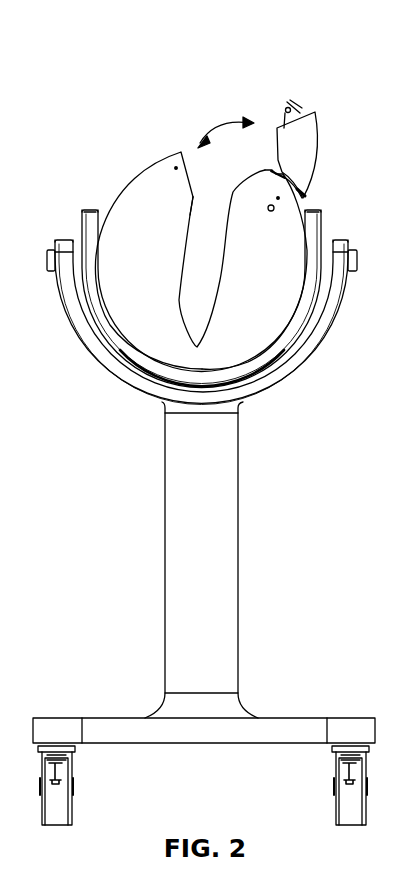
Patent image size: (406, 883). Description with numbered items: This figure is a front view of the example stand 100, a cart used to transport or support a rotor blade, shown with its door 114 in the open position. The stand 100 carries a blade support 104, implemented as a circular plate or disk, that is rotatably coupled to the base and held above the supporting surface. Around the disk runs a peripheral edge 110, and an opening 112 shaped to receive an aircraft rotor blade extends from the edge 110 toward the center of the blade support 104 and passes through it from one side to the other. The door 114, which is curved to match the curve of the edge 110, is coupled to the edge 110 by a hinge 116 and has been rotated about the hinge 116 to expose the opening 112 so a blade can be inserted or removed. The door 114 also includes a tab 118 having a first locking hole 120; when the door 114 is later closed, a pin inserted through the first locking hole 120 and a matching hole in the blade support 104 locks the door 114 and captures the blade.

The stand 100 is at (100, 79).
The blade support 104 is at (295, 243).
The peripheral edge 110 is at (162, 153).
The opening 112 is at (192, 205).
The door 114 is at (315, 137).
The hinge 116 is at (274, 208).
The tab 118 is at (295, 106).
The first locking hole 120 is at (290, 104).